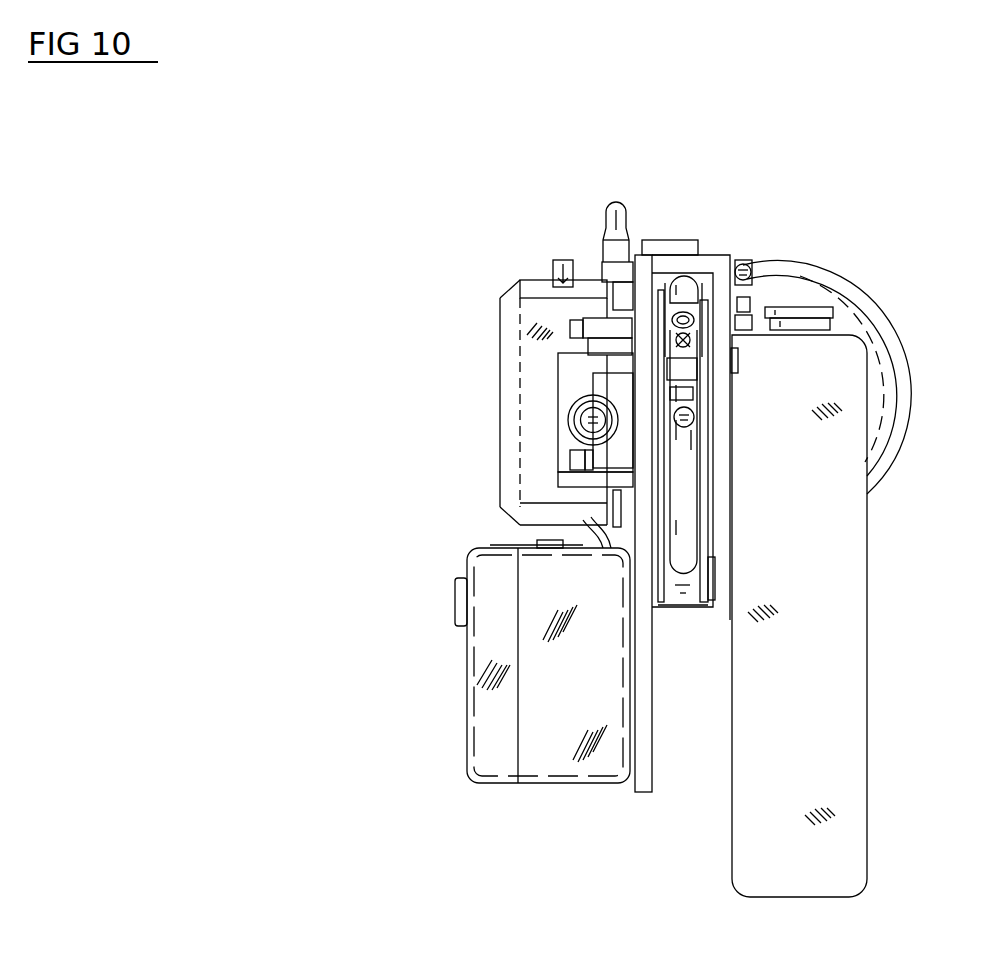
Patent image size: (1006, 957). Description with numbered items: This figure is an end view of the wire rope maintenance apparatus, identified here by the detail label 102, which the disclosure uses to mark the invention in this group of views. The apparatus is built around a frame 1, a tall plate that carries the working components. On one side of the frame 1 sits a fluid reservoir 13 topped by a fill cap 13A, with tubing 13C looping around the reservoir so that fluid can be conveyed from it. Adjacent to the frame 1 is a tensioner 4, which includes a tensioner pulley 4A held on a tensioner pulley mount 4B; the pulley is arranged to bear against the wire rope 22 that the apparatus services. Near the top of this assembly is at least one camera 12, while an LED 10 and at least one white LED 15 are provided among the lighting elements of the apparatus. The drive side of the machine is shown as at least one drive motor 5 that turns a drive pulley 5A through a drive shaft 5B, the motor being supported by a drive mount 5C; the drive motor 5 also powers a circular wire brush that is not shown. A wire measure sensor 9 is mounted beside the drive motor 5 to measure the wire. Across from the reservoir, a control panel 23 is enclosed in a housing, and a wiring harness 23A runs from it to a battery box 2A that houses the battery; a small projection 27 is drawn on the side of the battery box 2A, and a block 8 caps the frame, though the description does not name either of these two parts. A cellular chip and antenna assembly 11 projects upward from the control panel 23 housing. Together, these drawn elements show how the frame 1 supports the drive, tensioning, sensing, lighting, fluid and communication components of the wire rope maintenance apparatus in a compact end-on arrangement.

The detail 102 is at (545, 208).
The frame 1 is at (663, 262).
The top block 8 is at (667, 243).
The tensioner 4 is at (708, 527).
The tensioner pulley 4A is at (683, 482).
The tensioner pulley mount 4B is at (717, 578).
The camera 12 is at (690, 286).
The drive pulley 5A is at (696, 312).
The LED 10 is at (703, 357).
The wire rope 22 is at (695, 422).
The white LED 15 is at (748, 292).
The fill cap 13A is at (803, 313).
The drive shaft 5B is at (740, 358).
The fluid reservoir 13 is at (847, 648).
The tubing 13C is at (893, 472).
The cellular chip and antenna assembly 11 is at (613, 222).
The control panel 23 is at (533, 348).
The drive motor 5 is at (563, 420).
The wire measure sensor 9 is at (673, 395).
The drive mount 5C is at (577, 327).
The wiring harness 23A is at (553, 262).
The battery box 2A is at (493, 568).
The switch 27 is at (455, 613).